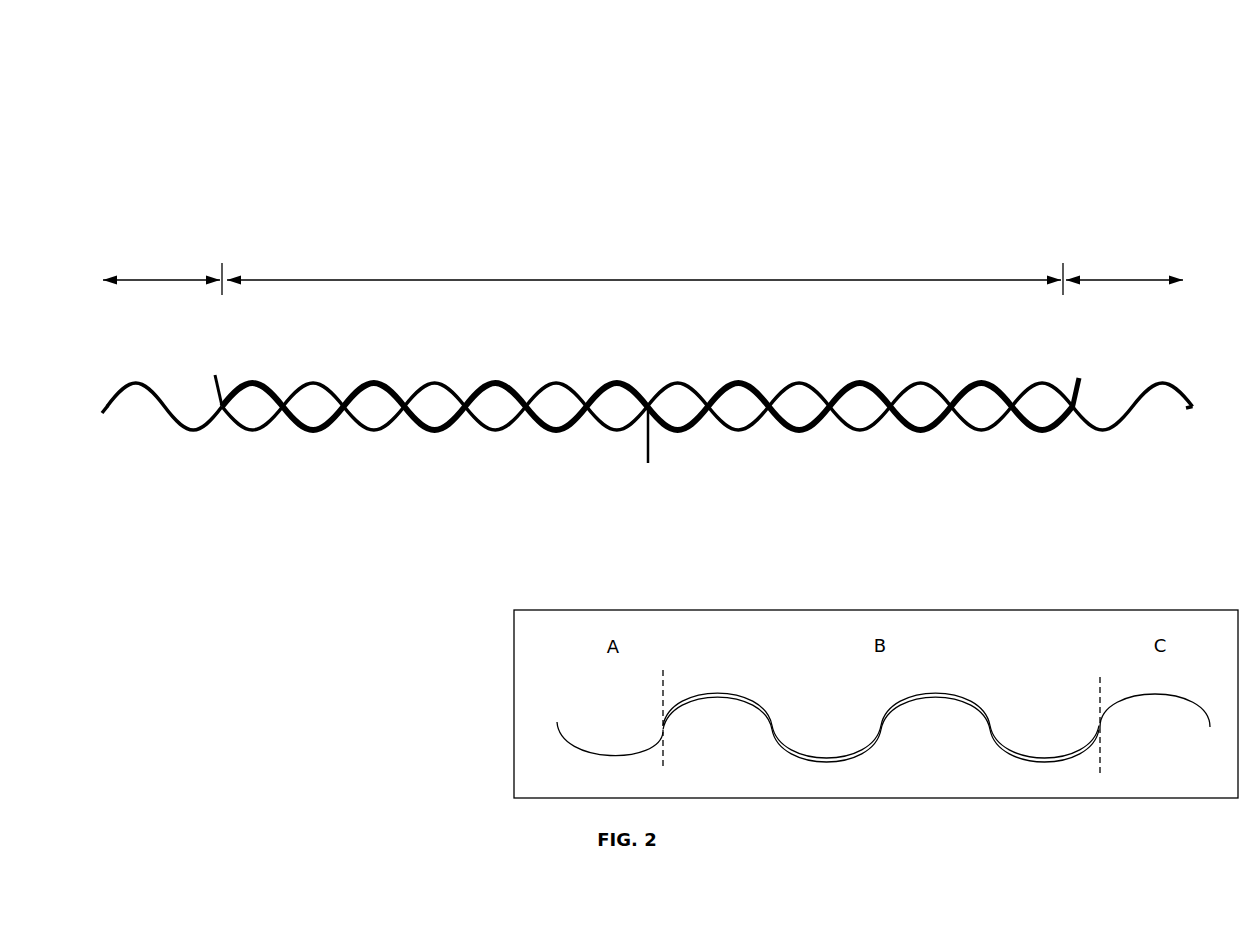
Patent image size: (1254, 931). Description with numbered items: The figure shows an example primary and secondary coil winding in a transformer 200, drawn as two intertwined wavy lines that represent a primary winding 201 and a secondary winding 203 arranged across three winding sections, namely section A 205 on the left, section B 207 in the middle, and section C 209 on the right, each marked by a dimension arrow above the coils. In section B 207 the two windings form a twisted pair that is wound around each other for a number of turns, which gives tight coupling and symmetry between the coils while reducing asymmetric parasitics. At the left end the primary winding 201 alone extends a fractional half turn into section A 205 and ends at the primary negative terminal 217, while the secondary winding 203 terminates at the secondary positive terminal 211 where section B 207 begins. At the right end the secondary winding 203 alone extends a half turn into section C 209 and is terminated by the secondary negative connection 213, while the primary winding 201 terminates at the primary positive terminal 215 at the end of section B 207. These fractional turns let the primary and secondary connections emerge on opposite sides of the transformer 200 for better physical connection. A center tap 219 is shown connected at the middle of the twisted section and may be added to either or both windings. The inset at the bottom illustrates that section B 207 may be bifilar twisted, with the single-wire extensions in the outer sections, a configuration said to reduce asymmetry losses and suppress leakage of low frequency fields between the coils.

The transformer 200 is at (260, 66).
The primary winding 201 is at (175, 423).
The secondary winding 203 is at (1117, 430).
The section A 205 is at (162, 264).
The section B 207 is at (644, 258).
The section C 209 is at (1123, 264).
The terminal S+ 211 is at (215, 363).
The connection S− 213 is at (1195, 433).
The terminal P+ 215 is at (1082, 368).
The terminal P− 217 is at (98, 432).
The center tap 219 is at (648, 476).